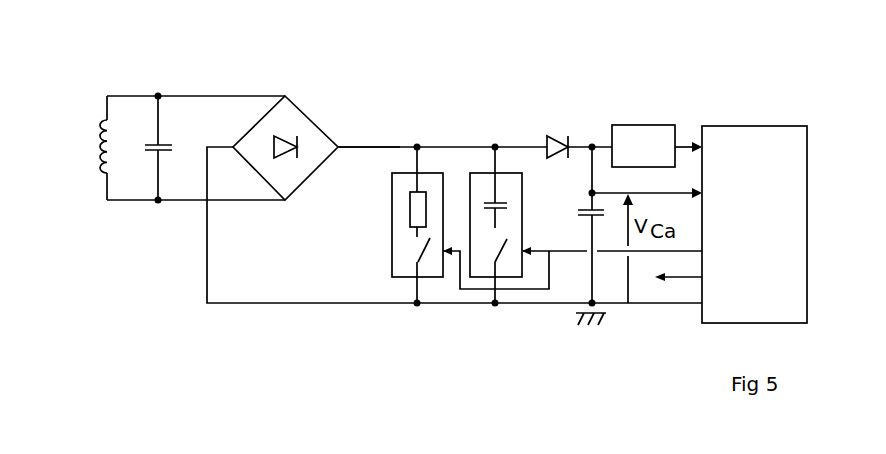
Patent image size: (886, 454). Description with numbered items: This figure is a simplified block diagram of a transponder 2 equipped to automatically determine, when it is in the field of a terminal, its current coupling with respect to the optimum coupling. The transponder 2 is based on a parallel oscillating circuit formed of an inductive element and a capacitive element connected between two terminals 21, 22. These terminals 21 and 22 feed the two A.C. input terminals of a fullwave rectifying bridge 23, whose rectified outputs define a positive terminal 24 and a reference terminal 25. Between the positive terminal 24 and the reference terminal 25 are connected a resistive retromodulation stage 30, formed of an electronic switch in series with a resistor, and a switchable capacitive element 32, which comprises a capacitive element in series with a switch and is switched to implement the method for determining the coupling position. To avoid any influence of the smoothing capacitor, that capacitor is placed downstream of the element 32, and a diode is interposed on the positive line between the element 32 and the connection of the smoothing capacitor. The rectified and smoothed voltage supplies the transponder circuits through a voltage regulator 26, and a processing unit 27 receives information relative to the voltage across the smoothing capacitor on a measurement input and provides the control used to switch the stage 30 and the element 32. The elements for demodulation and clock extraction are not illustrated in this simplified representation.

The transponder 2 is at (600, 79).
The terminal 21 is at (158, 95).
The terminal 22 is at (158, 200).
The rectifying bridge 23 is at (315, 121).
The positive terminal 24 is at (417, 147).
The reference terminal 25 is at (417, 303).
The voltage regulator 26 is at (637, 125).
The processing unit 27 is at (742, 126).
The modulation stage 30 is at (392, 237).
The switchable capacitive element 32 is at (524, 197).